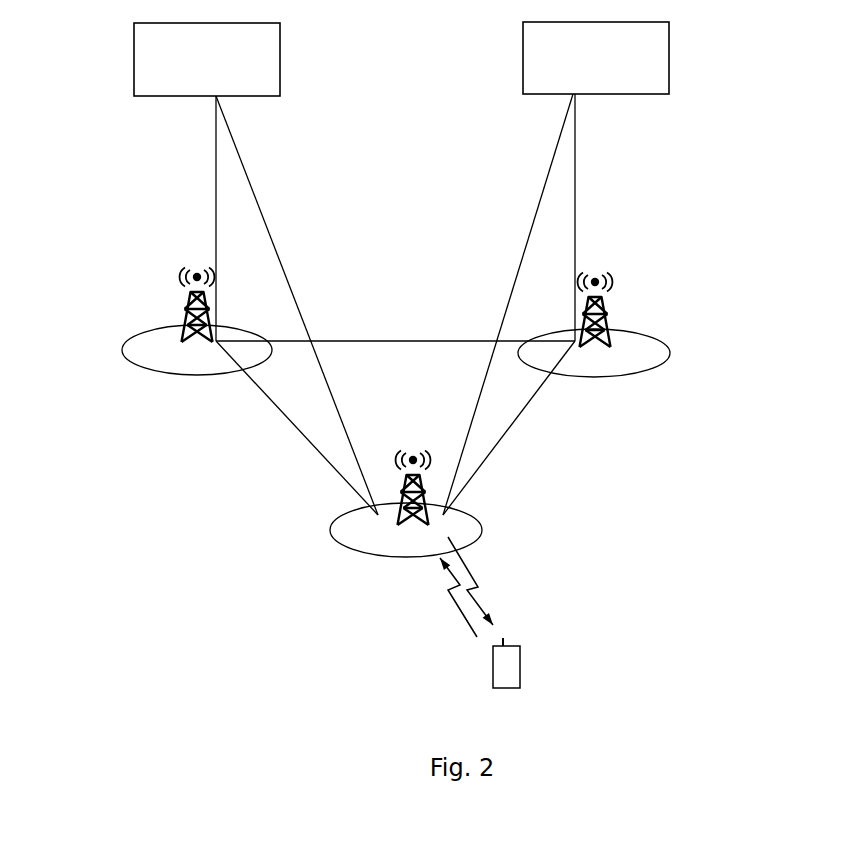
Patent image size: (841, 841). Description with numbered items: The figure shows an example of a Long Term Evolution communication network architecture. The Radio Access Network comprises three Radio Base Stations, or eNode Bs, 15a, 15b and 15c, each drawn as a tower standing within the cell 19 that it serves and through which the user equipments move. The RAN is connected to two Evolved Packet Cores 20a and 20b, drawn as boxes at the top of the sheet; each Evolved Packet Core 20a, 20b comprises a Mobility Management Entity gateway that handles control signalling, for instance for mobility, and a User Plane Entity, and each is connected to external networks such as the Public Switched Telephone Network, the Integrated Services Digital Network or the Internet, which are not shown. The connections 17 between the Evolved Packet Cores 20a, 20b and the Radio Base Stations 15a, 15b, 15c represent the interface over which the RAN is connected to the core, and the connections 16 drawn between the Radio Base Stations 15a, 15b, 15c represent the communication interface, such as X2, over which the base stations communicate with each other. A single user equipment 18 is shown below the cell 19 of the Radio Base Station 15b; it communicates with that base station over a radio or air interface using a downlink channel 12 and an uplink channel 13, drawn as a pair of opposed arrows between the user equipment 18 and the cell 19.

The Evolved Packet Core 20a is at (207, 59).
The Evolved Packet Core 20b is at (596, 58).
The backhaul connection 17 is at (216, 195).
The inter-base-station connection 16 is at (375, 341).
The cell coverage area 19 is at (122, 342).
The Radio Base Station 15a is at (183, 305).
The Radio Base Station 15b is at (397, 518).
The Radio Base Station 15c is at (609, 298).
The downlink channel 12 is at (465, 565).
The uplink channel 13 is at (462, 613).
The user equipment 18 is at (520, 665).